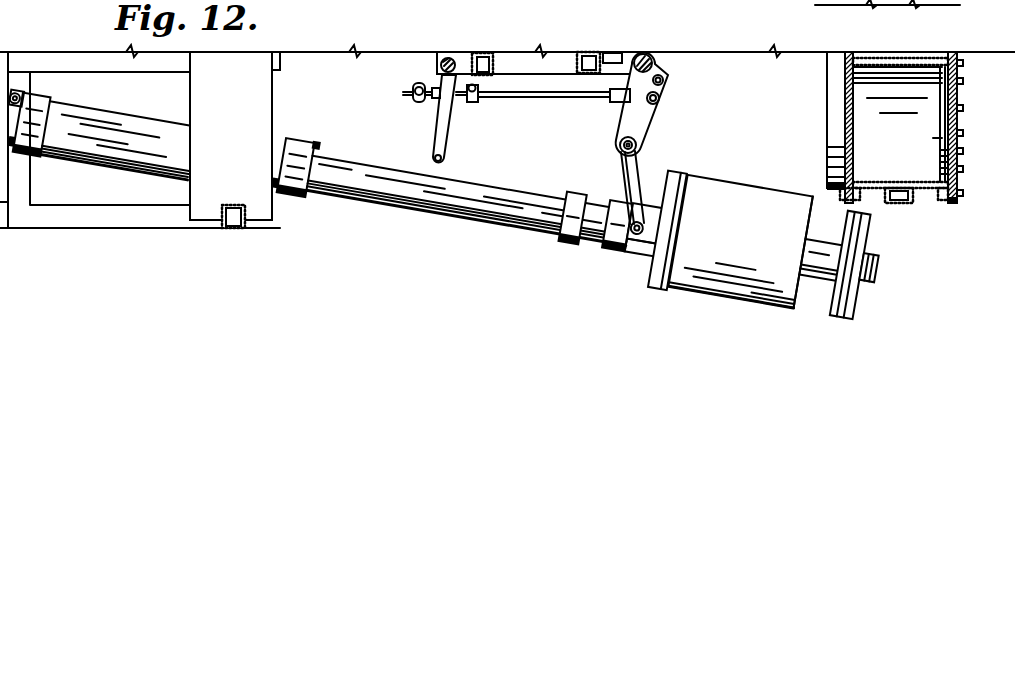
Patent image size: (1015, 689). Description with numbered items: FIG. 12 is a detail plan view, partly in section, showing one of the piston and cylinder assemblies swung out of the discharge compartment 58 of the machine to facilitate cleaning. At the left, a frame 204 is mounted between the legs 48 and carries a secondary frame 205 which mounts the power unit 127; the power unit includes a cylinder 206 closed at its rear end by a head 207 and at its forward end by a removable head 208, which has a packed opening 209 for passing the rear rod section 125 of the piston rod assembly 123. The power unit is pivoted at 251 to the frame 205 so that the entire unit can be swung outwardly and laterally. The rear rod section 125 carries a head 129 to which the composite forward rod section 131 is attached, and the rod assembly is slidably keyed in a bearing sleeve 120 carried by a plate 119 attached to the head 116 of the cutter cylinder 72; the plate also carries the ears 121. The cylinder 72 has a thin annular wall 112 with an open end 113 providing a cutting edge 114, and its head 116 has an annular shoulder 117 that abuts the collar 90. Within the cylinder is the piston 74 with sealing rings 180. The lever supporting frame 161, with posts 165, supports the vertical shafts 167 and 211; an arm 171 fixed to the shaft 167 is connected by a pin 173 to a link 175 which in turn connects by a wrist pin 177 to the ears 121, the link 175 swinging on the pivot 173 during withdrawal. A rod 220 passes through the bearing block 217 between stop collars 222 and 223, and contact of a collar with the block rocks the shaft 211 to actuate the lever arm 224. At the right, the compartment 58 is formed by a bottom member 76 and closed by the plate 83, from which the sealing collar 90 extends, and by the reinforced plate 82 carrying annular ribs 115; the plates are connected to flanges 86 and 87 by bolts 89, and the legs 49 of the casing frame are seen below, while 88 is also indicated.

The pivot 251 is at (20, 93).
The head 207 is at (40, 112).
The cylinder 206 is at (124, 160).
The secondary frame 205 is at (137, 229).
The frame 204 is at (264, 110).
The legs 48 is at (241, 229).
The power unit 127 is at (288, 199).
The removable head 208 is at (316, 147).
The opening 209 is at (328, 172).
The rear rod section 125 is at (404, 204).
The piston rod assembly 123 is at (497, 224).
The head 129 is at (571, 203).
The bearing sleeve 120 is at (617, 212).
The ears 121 is at (620, 246).
The wrist pin 177 is at (643, 230).
The plate 119 is at (649, 260).
The head 116 is at (677, 165).
The annular shoulder 117 is at (683, 246).
The annular wall 112 is at (739, 201).
The open end 113 is at (805, 220).
The cutter or cylinder 72 is at (732, 307).
The cutting edge 114 is at (798, 300).
The composite forward rod section 131 is at (830, 276).
The piston 74 is at (861, 296).
The sealing rings 180 is at (852, 321).
The lever supporting frame 161 is at (443, 52).
The vertical shaft 211 is at (450, 60).
The posts 165 is at (484, 55).
The vertical shaft 167 is at (653, 64).
The upper arm 171 is at (648, 109).
The pin 173 is at (621, 143).
The link 175 is at (641, 172).
The lever arm 224 is at (447, 128).
The stop collar 222 is at (418, 96).
The bearing block 217 is at (471, 96).
The stop collar 223 is at (479, 94).
The rod 220 is at (563, 98).
The plate 83 is at (845, 108).
The collar 90 is at (826, 157).
The plate foot 88 is at (830, 184).
The annular ribs 115 is at (957, 102).
The bottom member 76 is at (958, 140).
The plate 82 is at (958, 168).
The flange 86 is at (870, 183).
The legs 49 is at (903, 205).
The compartment 58 is at (937, 195).
The bolts 89 is at (962, 194).
The flange 87 is at (954, 203).